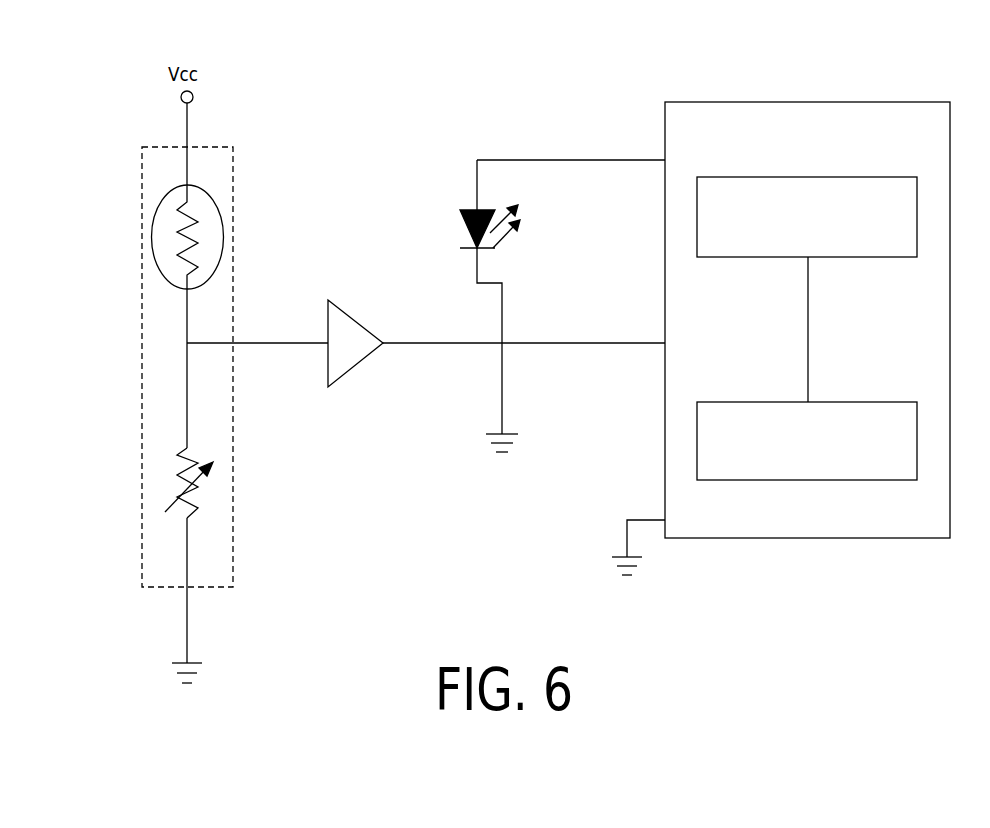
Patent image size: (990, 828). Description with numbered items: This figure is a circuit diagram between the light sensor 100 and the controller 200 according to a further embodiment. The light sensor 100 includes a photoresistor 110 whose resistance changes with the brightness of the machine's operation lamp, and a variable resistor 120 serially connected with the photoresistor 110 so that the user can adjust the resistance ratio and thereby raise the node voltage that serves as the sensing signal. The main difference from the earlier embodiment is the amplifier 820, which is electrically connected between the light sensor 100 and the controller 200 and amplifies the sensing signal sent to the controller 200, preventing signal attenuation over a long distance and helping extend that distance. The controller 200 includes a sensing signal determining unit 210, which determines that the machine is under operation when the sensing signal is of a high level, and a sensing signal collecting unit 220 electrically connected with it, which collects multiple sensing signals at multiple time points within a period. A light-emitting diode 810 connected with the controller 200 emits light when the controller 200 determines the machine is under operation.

The light sensor 100 is at (218, 147).
The photoresistor 110 is at (154, 232).
The variable resistor 120 is at (178, 475).
The controller 200 is at (840, 102).
The sensing signal determining unit 210 is at (850, 257).
The sensing signal collecting unit 220 is at (852, 402).
The light-emitting diode 810 is at (466, 208).
The amplifier 820 is at (355, 320).